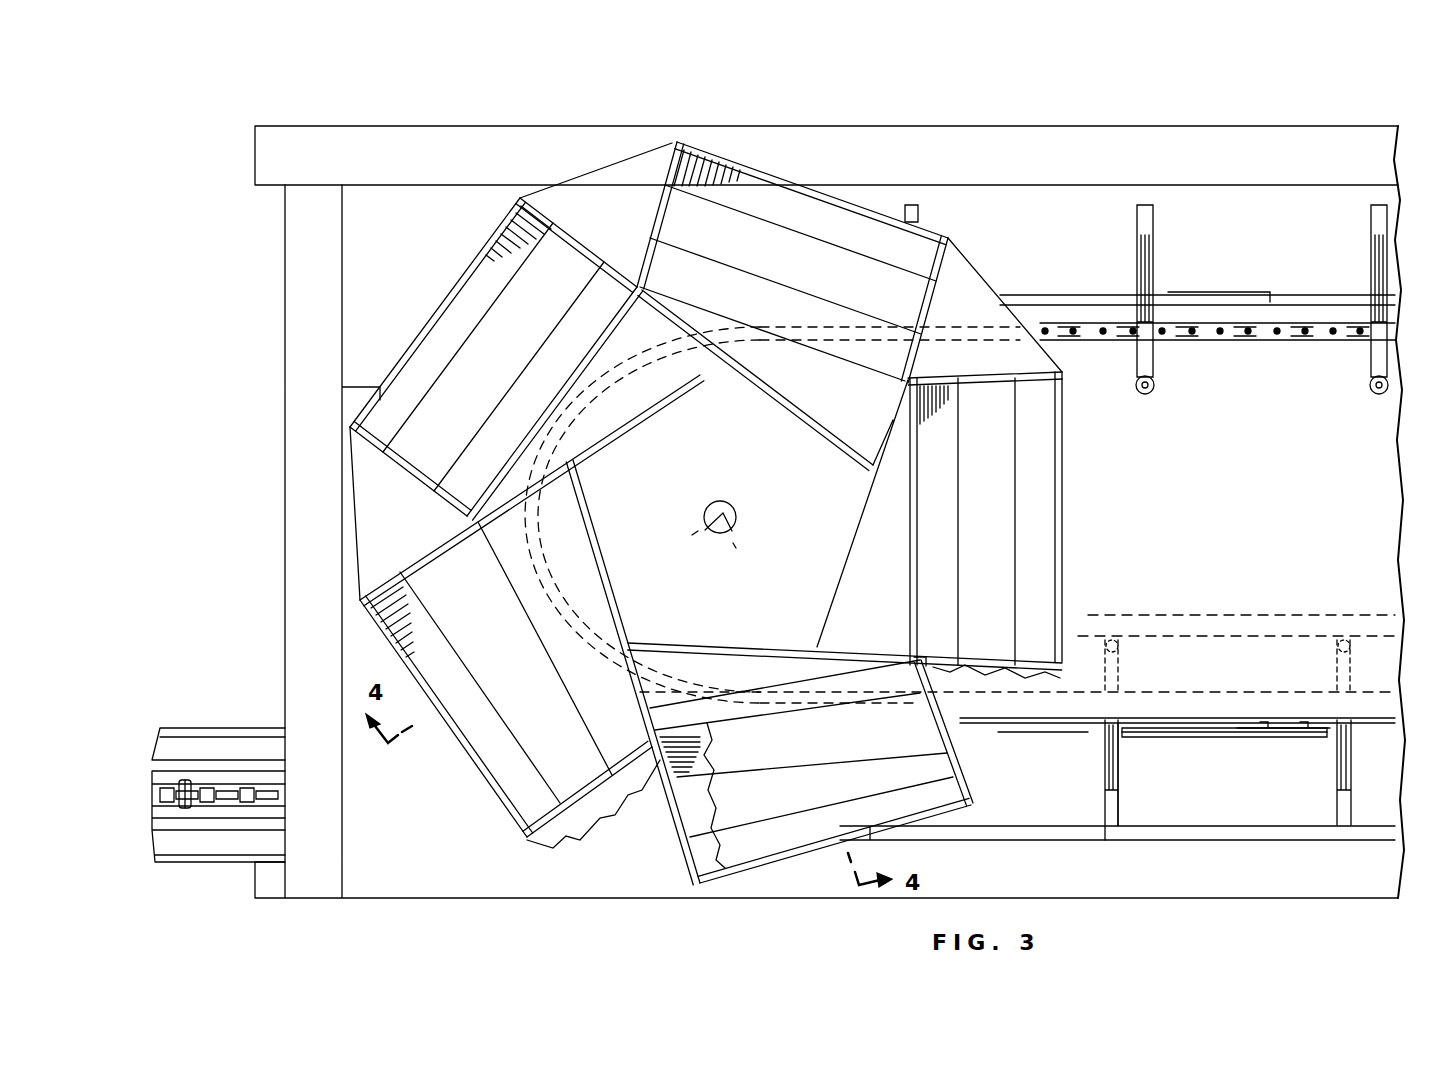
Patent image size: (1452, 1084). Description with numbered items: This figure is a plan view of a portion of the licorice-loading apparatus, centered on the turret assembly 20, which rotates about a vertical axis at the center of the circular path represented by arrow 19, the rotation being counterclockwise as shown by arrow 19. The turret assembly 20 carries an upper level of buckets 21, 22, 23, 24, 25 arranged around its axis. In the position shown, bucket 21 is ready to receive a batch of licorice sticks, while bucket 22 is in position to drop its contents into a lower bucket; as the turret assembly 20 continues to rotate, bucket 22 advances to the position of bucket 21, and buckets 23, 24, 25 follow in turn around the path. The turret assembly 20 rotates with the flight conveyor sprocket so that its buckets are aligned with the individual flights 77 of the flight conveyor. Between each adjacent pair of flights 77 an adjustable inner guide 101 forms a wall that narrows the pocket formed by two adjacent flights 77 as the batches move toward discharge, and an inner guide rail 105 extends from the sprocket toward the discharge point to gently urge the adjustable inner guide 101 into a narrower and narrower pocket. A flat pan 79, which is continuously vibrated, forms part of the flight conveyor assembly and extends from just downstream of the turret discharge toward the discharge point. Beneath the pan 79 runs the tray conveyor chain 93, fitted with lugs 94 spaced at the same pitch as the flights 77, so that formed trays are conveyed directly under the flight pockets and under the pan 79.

The arrow 19 is at (662, 556).
The turret assembly 20 is at (975, 268).
The bucket 21 is at (1042, 511).
The bucket 22 is at (725, 855).
The bucket 23 is at (505, 770).
The bucket 24 is at (458, 303).
The bucket 25 is at (793, 203).
The flights 77 is at (1137, 226).
The flat pan 79 is at (1062, 801).
The chain 93 is at (237, 783).
The lugs 94 is at (185, 780).
The adjustable inner guide 101 is at (1205, 738).
The inner guide rail 105 is at (1268, 615).